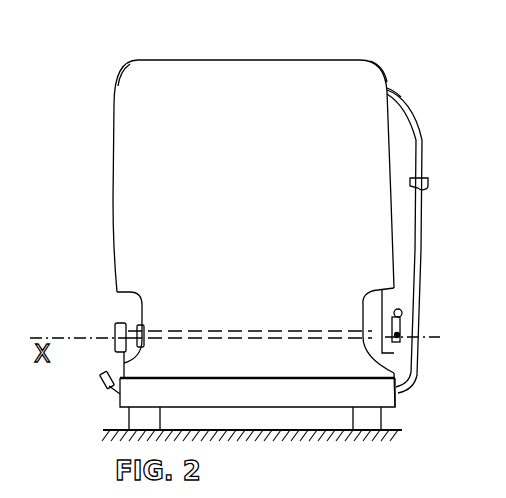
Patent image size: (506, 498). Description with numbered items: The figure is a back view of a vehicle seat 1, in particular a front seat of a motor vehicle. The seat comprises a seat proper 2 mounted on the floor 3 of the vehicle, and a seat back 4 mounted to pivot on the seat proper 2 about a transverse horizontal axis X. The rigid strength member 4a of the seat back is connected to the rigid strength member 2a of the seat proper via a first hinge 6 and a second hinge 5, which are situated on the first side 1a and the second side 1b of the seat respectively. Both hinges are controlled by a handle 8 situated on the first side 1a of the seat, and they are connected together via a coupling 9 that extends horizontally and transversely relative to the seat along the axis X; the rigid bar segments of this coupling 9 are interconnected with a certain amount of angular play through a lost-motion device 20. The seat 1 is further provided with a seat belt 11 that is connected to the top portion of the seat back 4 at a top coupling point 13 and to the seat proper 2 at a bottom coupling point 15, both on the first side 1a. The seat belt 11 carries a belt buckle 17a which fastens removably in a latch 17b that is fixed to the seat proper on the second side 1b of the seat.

The vehicle seat 1 is at (100, 193).
The first side 1a is at (381, 65).
The second side 1b is at (118, 75).
The seat proper 2 is at (128, 393).
The rigid strength member of the seat proper 2a is at (120, 358).
The floor 3 is at (291, 433).
The seat back 4 is at (138, 108).
The rigid strength member of the seat back 4a is at (128, 293).
The second hinge 5 is at (114, 330).
The first hinge 6 is at (393, 347).
The handle 8 is at (401, 325).
The coupling 9 is at (267, 330).
The seat belt 11 is at (419, 143).
The top coupling point 13 is at (389, 83).
The bottom coupling point 15 is at (413, 392).
The belt buckle 17a is at (426, 186).
The latch 17b is at (103, 385).
The lost-motion device 20 is at (140, 318).